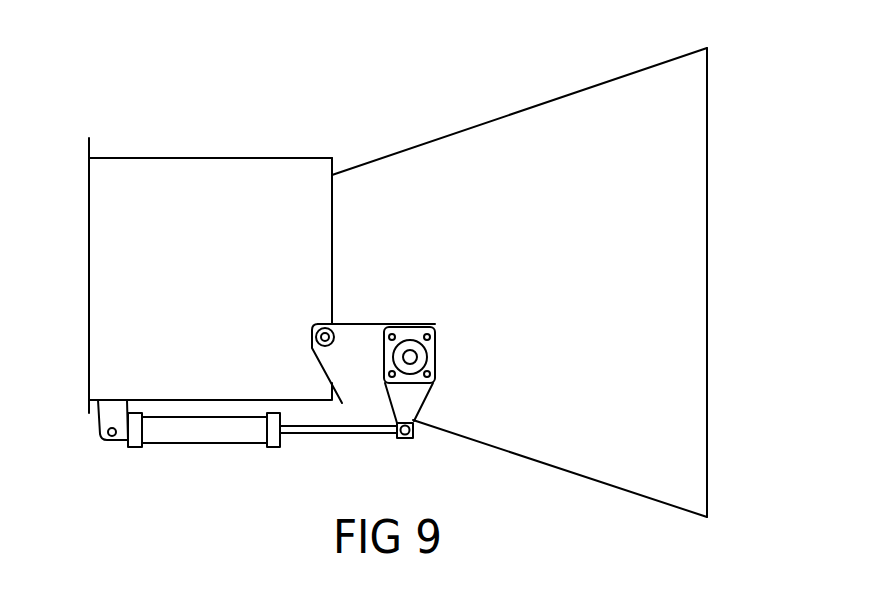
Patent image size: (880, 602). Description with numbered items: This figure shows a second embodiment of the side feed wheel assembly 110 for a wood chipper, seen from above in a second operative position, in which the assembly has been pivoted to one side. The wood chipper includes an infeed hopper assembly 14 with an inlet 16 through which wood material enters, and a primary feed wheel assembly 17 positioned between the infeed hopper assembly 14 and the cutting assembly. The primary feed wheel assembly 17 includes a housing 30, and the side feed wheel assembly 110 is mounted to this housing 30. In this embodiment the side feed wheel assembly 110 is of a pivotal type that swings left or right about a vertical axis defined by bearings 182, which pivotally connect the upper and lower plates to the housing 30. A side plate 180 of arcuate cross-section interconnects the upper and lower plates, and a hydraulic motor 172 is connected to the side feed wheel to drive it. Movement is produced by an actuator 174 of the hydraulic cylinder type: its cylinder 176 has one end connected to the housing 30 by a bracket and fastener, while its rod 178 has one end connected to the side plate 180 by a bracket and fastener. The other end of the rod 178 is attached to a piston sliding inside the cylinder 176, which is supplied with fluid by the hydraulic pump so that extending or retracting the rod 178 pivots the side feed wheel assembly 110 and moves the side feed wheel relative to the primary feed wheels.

The infeed hopper assembly 14 is at (624, 77).
The inlet 16 is at (707, 240).
The primary feed wheel assembly 17 is at (293, 158).
The housing 30 is at (232, 158).
The side feed wheel assembly 110 is at (136, 477).
The hydraulic motor 172 is at (417, 357).
The actuator 174 is at (242, 446).
The cylinder 176 is at (163, 425).
The rod 178 is at (351, 434).
The side plate 180 is at (340, 405).
The bearings 182 is at (334, 340).